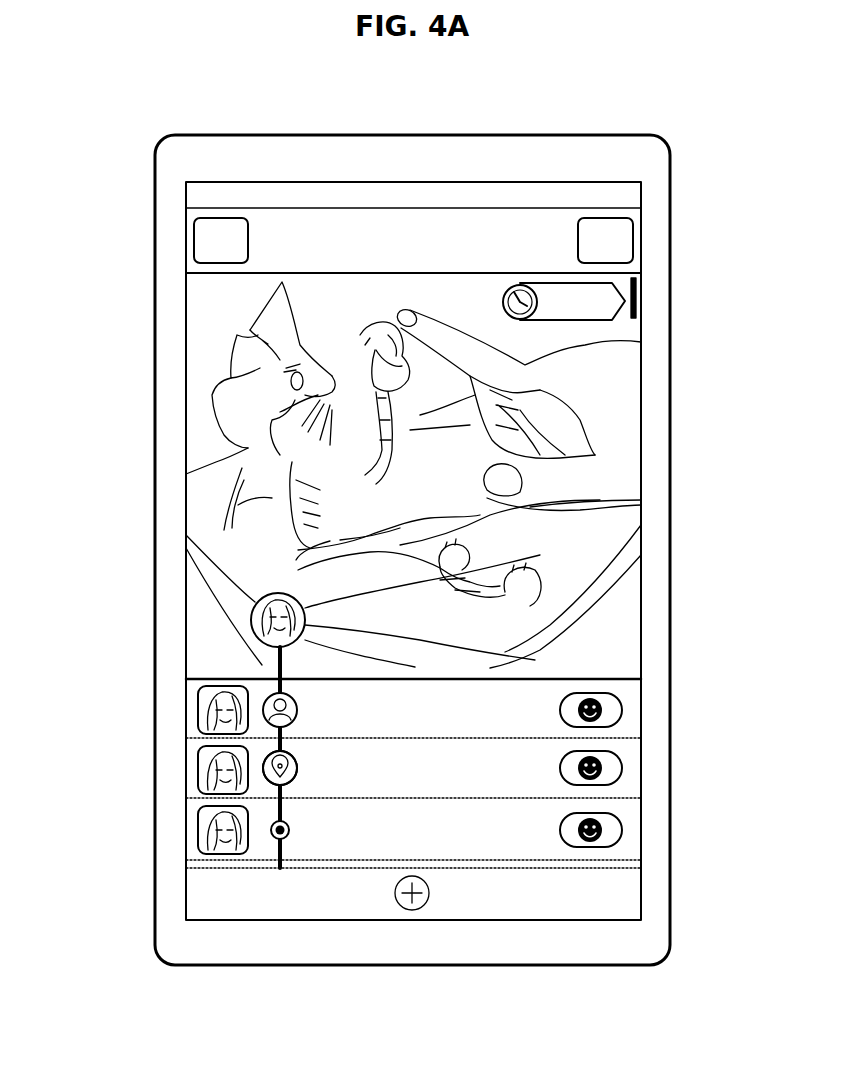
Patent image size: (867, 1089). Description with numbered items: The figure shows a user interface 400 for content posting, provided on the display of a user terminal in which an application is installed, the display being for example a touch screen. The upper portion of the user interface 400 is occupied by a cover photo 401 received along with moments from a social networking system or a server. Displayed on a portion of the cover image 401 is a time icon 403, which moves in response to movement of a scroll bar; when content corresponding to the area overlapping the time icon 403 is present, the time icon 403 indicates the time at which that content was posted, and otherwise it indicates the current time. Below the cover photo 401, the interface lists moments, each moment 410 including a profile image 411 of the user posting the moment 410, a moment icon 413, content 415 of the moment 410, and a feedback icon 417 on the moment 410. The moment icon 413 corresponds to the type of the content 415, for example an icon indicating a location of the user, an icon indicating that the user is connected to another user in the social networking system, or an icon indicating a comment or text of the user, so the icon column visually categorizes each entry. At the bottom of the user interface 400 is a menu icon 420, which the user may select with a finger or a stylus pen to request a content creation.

The user interface 400 is at (418, 135).
The cover photo 401 is at (178, 277).
The time icon 403 is at (645, 298).
The moment 410 is at (178, 740).
The profile image 411 is at (205, 795).
The moment icon 413 is at (262, 752).
The content 415 is at (316, 795).
The feedback icon 417 is at (622, 762).
The menu icon 420 is at (426, 905).